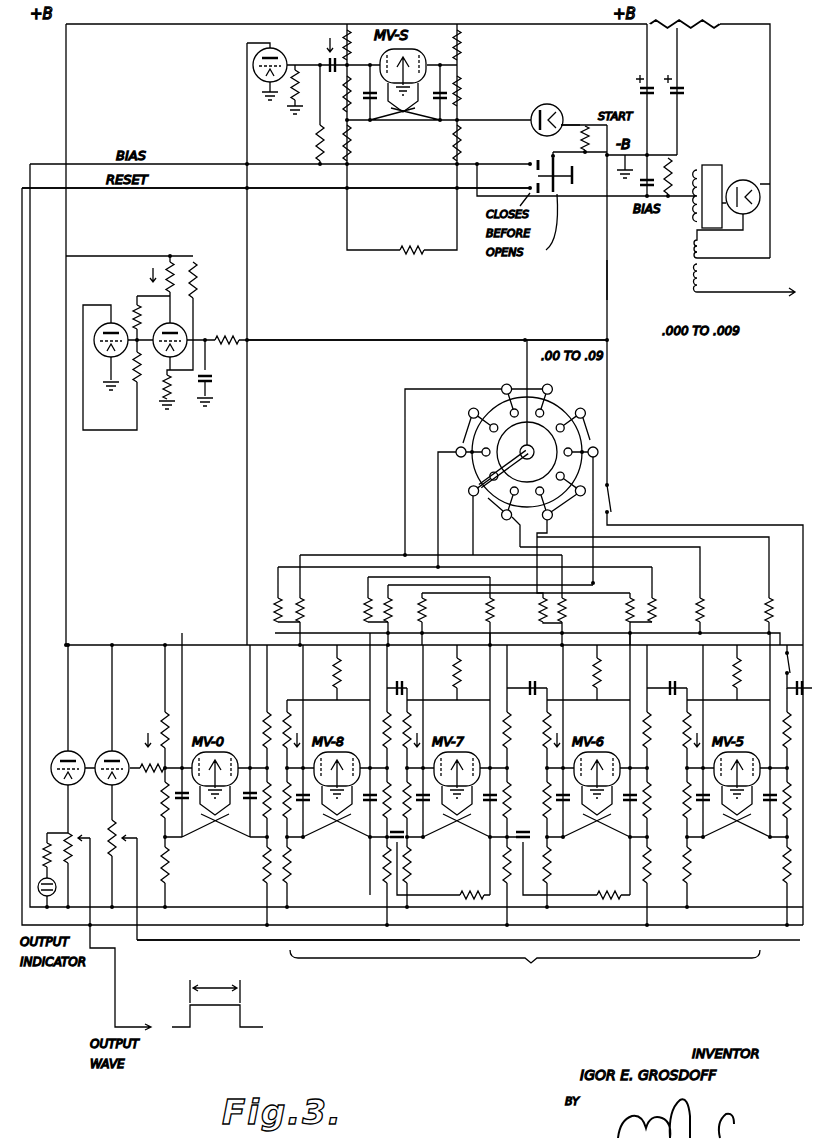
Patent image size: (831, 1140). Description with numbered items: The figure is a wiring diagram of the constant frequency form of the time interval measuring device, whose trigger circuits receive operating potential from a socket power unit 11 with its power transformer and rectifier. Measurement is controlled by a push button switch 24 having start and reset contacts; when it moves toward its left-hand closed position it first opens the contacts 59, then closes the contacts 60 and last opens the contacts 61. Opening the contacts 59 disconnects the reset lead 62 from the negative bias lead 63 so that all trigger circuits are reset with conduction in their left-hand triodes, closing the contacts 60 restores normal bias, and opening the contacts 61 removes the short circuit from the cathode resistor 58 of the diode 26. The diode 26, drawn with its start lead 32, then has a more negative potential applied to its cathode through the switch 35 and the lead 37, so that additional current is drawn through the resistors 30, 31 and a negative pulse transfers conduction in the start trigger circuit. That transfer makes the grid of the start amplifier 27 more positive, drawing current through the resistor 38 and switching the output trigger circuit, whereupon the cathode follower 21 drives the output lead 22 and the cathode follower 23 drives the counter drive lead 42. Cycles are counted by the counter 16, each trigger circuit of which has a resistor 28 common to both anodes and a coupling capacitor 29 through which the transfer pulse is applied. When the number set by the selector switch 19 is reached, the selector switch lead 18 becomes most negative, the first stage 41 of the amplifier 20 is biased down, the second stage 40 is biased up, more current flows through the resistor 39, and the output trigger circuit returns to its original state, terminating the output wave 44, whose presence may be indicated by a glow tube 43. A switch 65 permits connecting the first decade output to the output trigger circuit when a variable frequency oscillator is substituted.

The socket power unit 11 is at (752, 114).
The counter 16 is at (796, 619).
The selector switch lead 18 is at (449, 330).
The selector switch 19 is at (472, 495).
The amplifier 20 is at (137, 329).
The cathode follower 21 is at (63, 754).
The output lead 22 is at (110, 1002).
The cathode follower 23 is at (105, 754).
The push button switch 24 is at (566, 186).
The diode 26 is at (530, 118).
The start amplifier 27 is at (256, 70).
The resistor 28 is at (523, 666).
The coupling capacitor 29 is at (797, 709).
The resistor 30 is at (462, 40).
The resistor 31 is at (462, 89).
The start lead 32 is at (562, 114).
The switch 35 is at (547, 481).
The lead 37 is at (605, 282).
The resistor 38 is at (262, 721).
The resistor 39 is at (166, 717).
The second stage 40 is at (93, 330).
The first stage 41 is at (192, 334).
The counter drive lead 42 is at (237, 935).
The glow tube 43 is at (58, 885).
The output wave 44 is at (218, 1014).
The cathode resistor 58 is at (580, 140).
The contacts 59 is at (538, 159).
The contacts 60 is at (518, 178).
The contacts 61 is at (557, 161).
The reset lead 62 is at (303, 194).
The negative bias lead 63 is at (478, 168).
The switch 65 is at (792, 660).